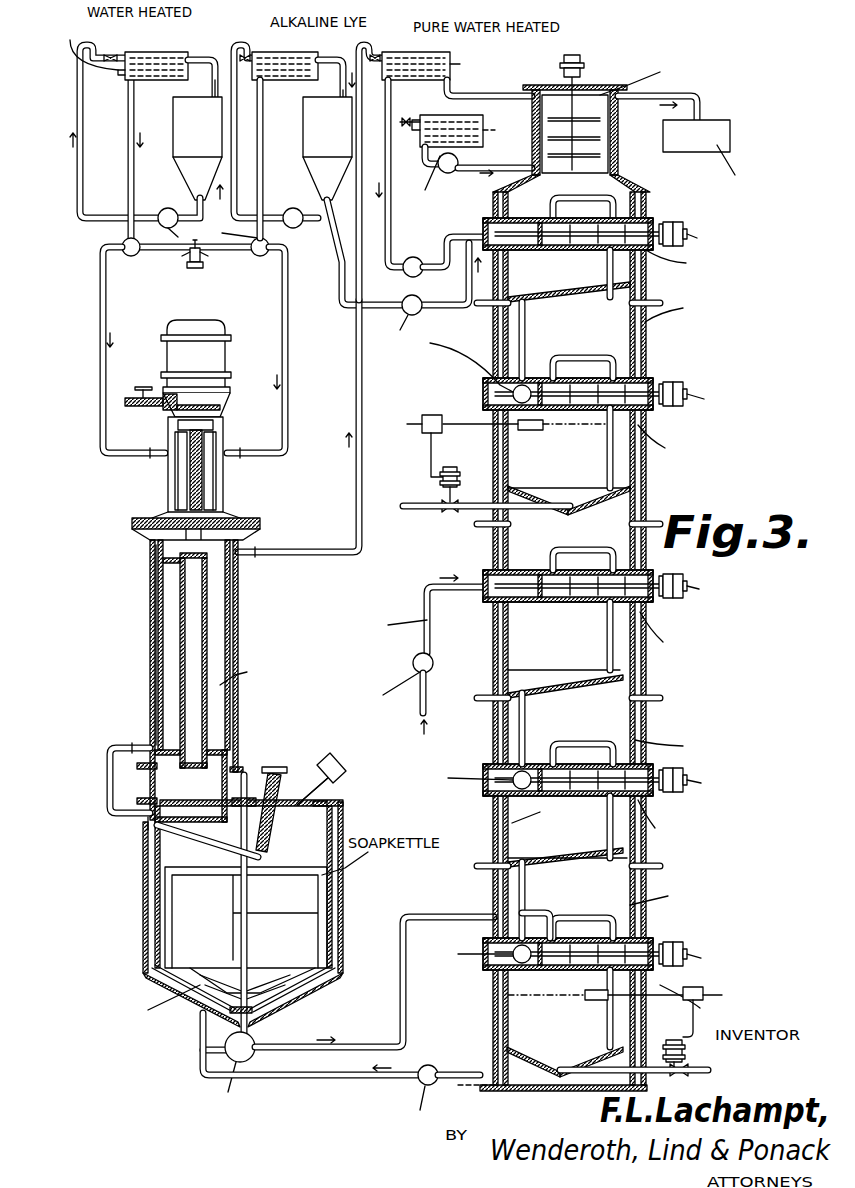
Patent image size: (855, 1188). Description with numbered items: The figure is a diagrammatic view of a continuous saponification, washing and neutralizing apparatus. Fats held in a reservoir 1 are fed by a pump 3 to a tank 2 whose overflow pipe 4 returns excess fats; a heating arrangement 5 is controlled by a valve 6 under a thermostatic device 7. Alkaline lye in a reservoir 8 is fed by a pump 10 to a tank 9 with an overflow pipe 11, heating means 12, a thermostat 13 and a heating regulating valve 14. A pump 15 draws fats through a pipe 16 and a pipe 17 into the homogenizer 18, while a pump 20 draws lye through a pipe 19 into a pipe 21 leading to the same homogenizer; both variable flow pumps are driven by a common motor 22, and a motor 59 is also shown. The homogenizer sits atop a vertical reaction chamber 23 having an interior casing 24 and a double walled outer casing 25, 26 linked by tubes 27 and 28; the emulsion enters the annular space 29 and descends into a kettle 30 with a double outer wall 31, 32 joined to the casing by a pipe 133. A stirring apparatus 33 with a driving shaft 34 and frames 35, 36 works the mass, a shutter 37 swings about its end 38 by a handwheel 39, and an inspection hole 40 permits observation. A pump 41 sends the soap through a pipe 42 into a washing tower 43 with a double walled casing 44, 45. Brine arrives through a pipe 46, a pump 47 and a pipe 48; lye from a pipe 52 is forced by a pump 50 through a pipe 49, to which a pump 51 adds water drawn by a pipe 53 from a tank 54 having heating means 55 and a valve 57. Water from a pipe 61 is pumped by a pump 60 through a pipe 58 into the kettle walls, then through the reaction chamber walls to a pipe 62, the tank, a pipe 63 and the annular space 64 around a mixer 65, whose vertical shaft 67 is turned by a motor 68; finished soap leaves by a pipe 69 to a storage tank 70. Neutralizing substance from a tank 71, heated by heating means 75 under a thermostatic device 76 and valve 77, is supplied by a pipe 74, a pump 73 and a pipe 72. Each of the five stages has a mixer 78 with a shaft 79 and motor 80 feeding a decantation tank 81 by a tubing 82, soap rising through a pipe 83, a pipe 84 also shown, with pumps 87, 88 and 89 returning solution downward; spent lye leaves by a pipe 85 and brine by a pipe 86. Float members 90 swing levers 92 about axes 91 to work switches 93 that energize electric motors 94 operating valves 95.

The reservoir 1 is at (198, 157).
The tank 2 is at (175, 52).
The pump 3 is at (208, 212).
The overflow pipe 4 is at (203, 58).
The heating arrangement 5 is at (162, 80).
The valve 6 is at (110, 56).
The thermostatic device 7 is at (130, 68).
The reservoir 8 is at (340, 105).
The tank 9 is at (300, 60).
The pump 10 is at (290, 228).
The overflow pipe 11 is at (355, 30).
The heating means 12 is at (300, 85).
The thermostat 13 is at (213, 88).
The heating regulating valve 14 is at (246, 55).
The pump 15 is at (131, 256).
The pipe 16 is at (128, 165).
The pipe 17 is at (103, 345).
The homogenizer 18 is at (160, 493).
The pipe 19 is at (262, 200).
The pump 20 is at (260, 256).
The pipe 21 is at (288, 380).
The motor 22 is at (187, 266).
The reaction chamber 23 is at (145, 690).
The interior casing 24 is at (208, 650).
The inner wall 25 is at (240, 595).
The outer wall 26 is at (240, 612).
The tube 27 is at (172, 566).
The tube 28 is at (228, 752).
The annular space 29 is at (215, 705).
The kettle 30 is at (138, 943).
The outer wall 31 is at (158, 870).
The outer wall 32 is at (150, 905).
The stirring apparatus 33 is at (262, 912).
The driving shaft 34 is at (250, 880).
The frame 35 is at (165, 955).
The frame 36 is at (312, 930).
The shutter 37 is at (210, 845).
The shutter end 38 is at (145, 840).
The handwheel 39 is at (285, 772).
The inspection hole 40 is at (338, 775).
The pump 41 is at (255, 1040).
The pipe 42 is at (400, 986).
The washing tower 43 is at (653, 342).
The casing wall 44 is at (531, 823).
The casing wall 45 is at (480, 862).
The pipe 46 is at (420, 700).
The pump 47 is at (413, 662).
The pipe 48 is at (427, 600).
The pipe 49 is at (470, 248).
The pump 50 is at (420, 312).
The pump 51 is at (414, 255).
The pipe 52 is at (333, 250).
The pipe 53 is at (392, 230).
The tank 54 is at (433, 52).
The heating means 55 is at (455, 64).
The valve 57 is at (372, 56).
The pipe 58 is at (345, 1078).
The motor 59 is at (226, 362).
The pump 60 is at (432, 1065).
The pipe 61 is at (466, 1069).
The pipe 62 is at (355, 522).
The pipe 63 is at (470, 96).
The annular space 64 is at (483, 145).
The mixer 65 is at (585, 105).
The vertical shaft 67 is at (605, 130).
The motor 68 is at (576, 58).
The pipe 69 is at (690, 96).
The storage tank 70 is at (723, 128).
The tank 71 is at (470, 122).
The pipe 72 is at (495, 171).
The pump 73 is at (450, 172).
The pipe 74 is at (425, 190).
The heating means 75 is at (505, 130).
The thermostatic device 76 is at (422, 150).
The valve 77 is at (410, 118).
The mixer 78 is at (560, 250).
The shaft 79 is at (585, 240).
The motor 80 is at (685, 408).
The decantation tank 81 is at (595, 290).
The tubing 82 is at (646, 262).
The pipe 83 is at (610, 210).
The pipe 84 is at (518, 322).
The pipe 85 is at (478, 510).
The pipe 86 is at (598, 1075).
The pump 87 is at (488, 968).
The pump 88 is at (485, 795).
The pump 89 is at (480, 397).
The float member 90 is at (540, 430).
The axis 91 is at (495, 414).
The lever 92 is at (445, 430).
The switch 93 is at (425, 435).
The electric motor 94 is at (440, 482).
The valve 95 is at (450, 512).
The pipe 133 is at (110, 780).